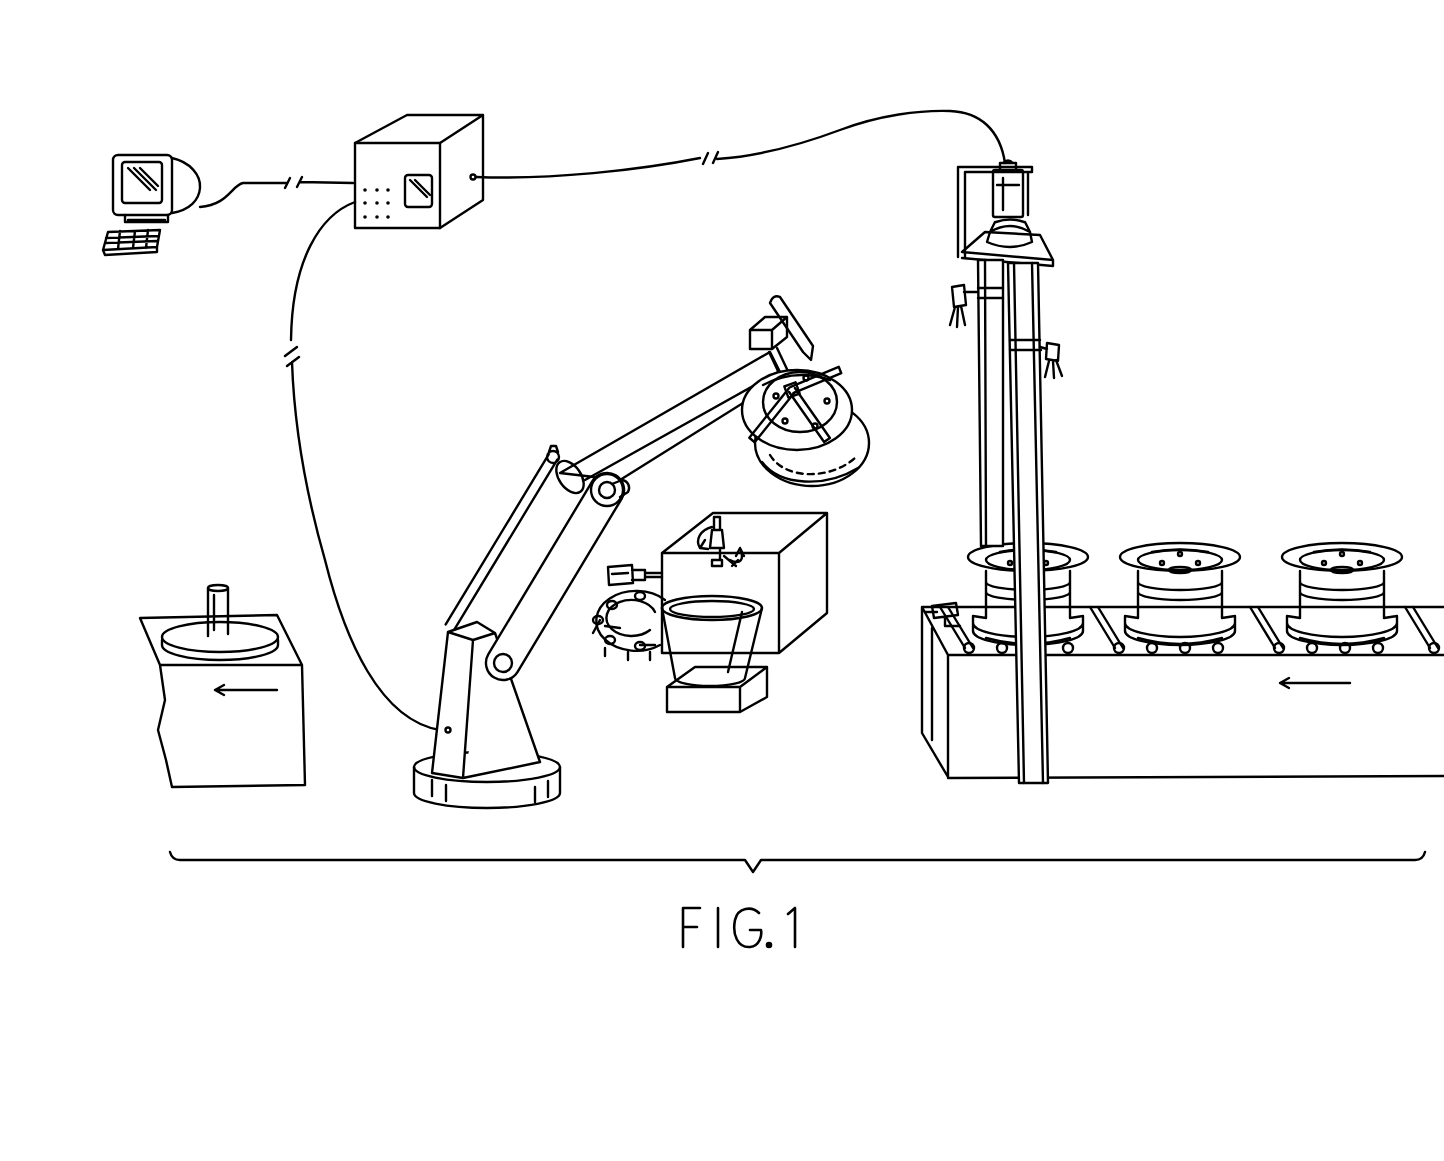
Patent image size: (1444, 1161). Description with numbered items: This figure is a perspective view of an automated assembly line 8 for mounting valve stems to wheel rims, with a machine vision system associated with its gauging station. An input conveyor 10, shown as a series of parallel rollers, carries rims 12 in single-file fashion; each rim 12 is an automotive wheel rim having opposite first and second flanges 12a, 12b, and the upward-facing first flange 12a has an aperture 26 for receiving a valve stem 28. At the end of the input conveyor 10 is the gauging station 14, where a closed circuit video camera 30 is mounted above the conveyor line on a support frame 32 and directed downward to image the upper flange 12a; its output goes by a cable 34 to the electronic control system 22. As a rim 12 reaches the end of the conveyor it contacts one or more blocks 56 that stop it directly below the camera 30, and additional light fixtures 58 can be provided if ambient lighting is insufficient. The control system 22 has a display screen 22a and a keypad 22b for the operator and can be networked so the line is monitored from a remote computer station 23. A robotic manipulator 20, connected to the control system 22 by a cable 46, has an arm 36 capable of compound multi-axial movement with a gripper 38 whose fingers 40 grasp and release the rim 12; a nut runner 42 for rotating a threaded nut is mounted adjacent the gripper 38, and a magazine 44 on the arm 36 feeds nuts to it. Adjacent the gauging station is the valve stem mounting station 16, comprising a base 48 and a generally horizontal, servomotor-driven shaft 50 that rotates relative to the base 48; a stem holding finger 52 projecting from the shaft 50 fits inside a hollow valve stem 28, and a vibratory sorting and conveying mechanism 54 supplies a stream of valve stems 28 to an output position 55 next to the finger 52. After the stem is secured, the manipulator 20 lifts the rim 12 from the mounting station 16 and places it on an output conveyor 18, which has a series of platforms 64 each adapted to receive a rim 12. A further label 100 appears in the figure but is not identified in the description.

The automated assembly line 8 is at (1298, 272).
The input conveyor 10 is at (1347, 413).
The rim 12 is at (1077, 487).
The first flange 12a is at (858, 382).
The second flange 12b is at (845, 472).
The gauging station 14 is at (1035, 413).
The valve stem mounting station 16 is at (764, 712).
The output conveyor 18 is at (222, 645).
The robotic manipulator 20 is at (601, 529).
The electronic control system 22 is at (382, 218).
The display screen 22a is at (420, 207).
The keypad 22b is at (377, 205).
The computer station 23 is at (191, 250).
The aperture 26 is at (820, 353).
The valve stem 28 is at (723, 517).
The closed circuit video camera 30 is at (1015, 197).
The support frame 32 is at (1040, 440).
The cable 34 is at (813, 138).
The arm 36 is at (503, 572).
The gripper 38 is at (733, 353).
The fingers 40 is at (828, 362).
The nut runner 42 is at (777, 305).
The magazine 44 is at (763, 330).
The cable 46 is at (297, 428).
The base 48 is at (792, 618).
The shaft 50 is at (754, 568).
The stem holding finger 52 is at (727, 562).
The vibratory sorting and conveying mechanism 54 is at (657, 670).
The output position 55 is at (650, 572).
The blocks 56 is at (937, 617).
The light fixtures 58 is at (955, 287).
The platforms 64 is at (186, 633).
The wheel processing system 100 is at (1233, 158).